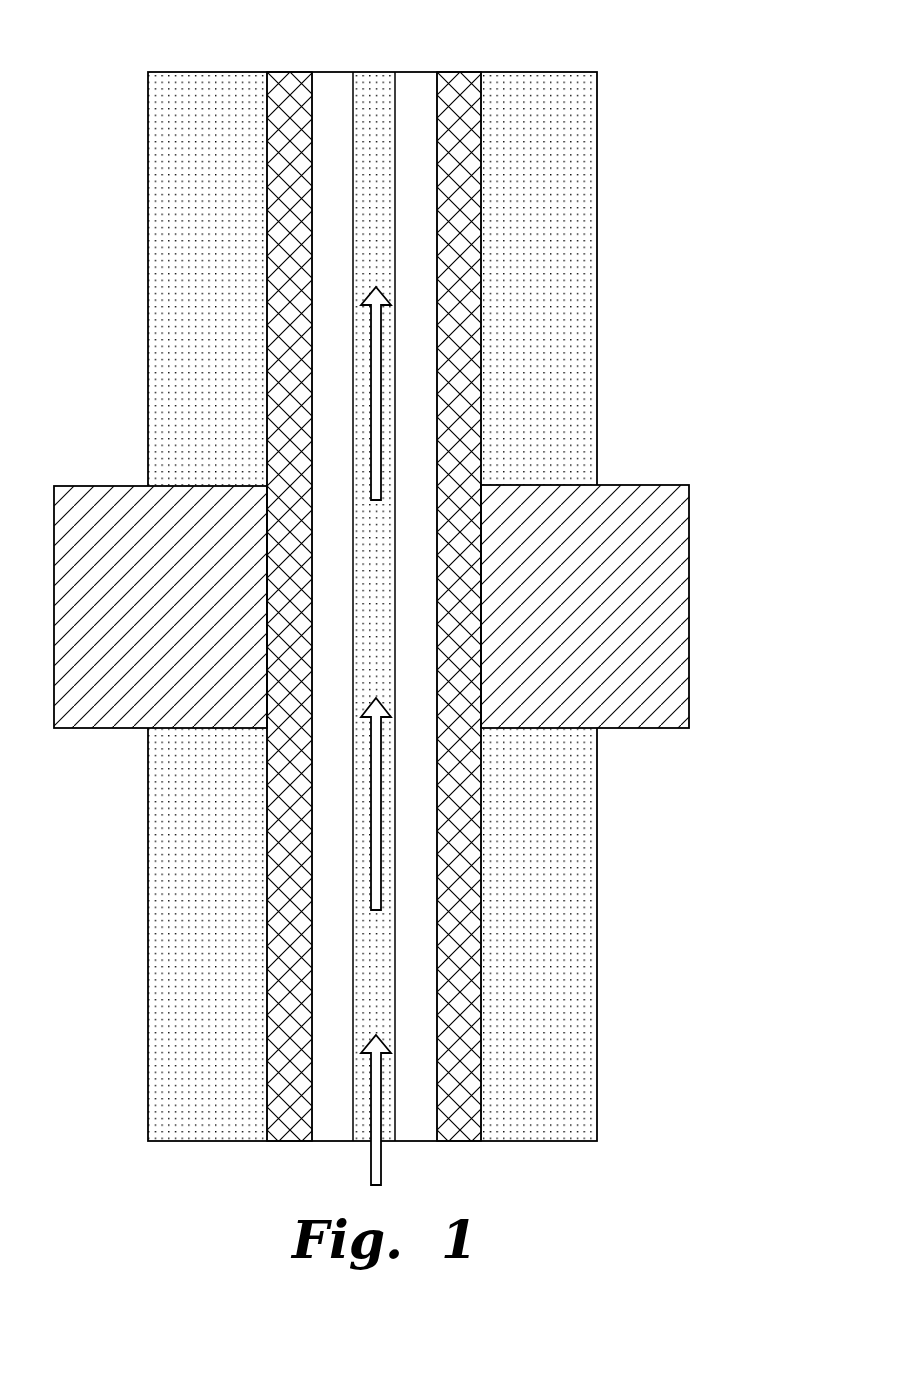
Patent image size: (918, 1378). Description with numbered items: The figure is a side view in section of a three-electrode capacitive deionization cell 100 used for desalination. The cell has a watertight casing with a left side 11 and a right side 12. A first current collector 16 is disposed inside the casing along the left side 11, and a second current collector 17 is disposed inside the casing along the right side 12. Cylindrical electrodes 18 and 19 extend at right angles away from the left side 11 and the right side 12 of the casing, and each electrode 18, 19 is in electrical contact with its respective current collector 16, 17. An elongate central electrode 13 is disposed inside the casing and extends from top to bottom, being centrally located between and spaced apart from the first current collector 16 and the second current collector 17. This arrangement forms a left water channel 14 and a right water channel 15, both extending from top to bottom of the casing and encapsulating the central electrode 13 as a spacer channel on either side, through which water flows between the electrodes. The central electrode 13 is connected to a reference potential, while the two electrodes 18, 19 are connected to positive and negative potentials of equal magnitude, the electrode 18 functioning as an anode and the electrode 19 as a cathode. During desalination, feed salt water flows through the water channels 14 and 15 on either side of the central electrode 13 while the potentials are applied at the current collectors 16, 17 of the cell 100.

The capacitive deionization cell 100 is at (719, 95).
The left side 11 is at (188, 62).
The right side 12 is at (544, 62).
The central electrode 13 is at (385, 62).
The left water channel 14 is at (331, 1153).
The right water channel 15 is at (420, 1153).
The first current collector 16 is at (257, 970).
The second current collector 17 is at (493, 955).
The cylindrical electrode 18 is at (100, 480).
The cylindrical electrode 19 is at (631, 478).